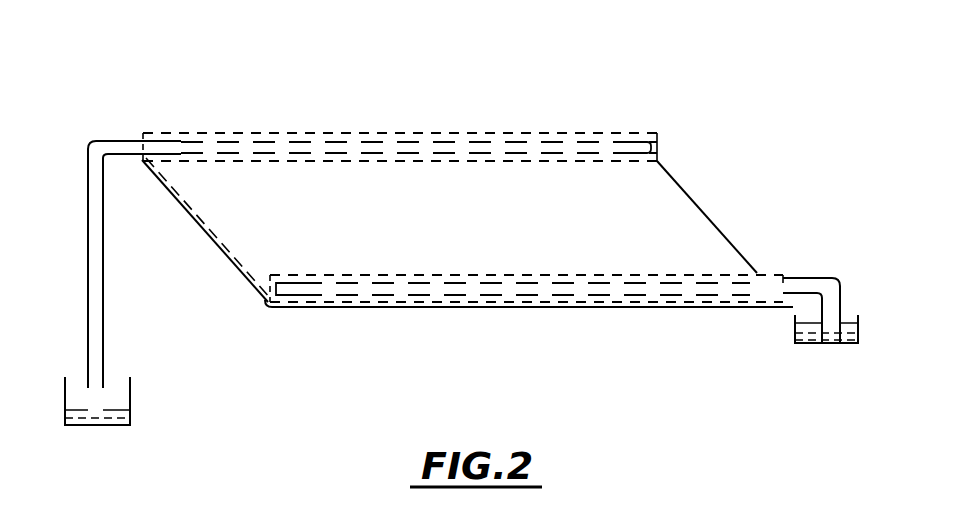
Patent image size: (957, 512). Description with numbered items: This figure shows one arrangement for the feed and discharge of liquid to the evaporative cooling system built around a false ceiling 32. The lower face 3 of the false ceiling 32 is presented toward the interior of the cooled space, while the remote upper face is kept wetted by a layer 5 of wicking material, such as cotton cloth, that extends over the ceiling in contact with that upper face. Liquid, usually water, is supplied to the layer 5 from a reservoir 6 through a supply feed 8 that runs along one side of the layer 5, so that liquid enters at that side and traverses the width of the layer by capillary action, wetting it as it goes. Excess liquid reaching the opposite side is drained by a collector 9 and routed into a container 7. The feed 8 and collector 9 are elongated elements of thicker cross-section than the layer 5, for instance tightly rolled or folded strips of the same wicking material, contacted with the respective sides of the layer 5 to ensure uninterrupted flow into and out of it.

The lower face 3 is at (305, 308).
The layer of wicking material 5 is at (420, 133).
The reservoir 6 is at (795, 329).
The container 7 is at (131, 391).
The supply feed 8 is at (828, 278).
The collector 9 is at (99, 148).
The false ceiling 32 is at (212, 245).